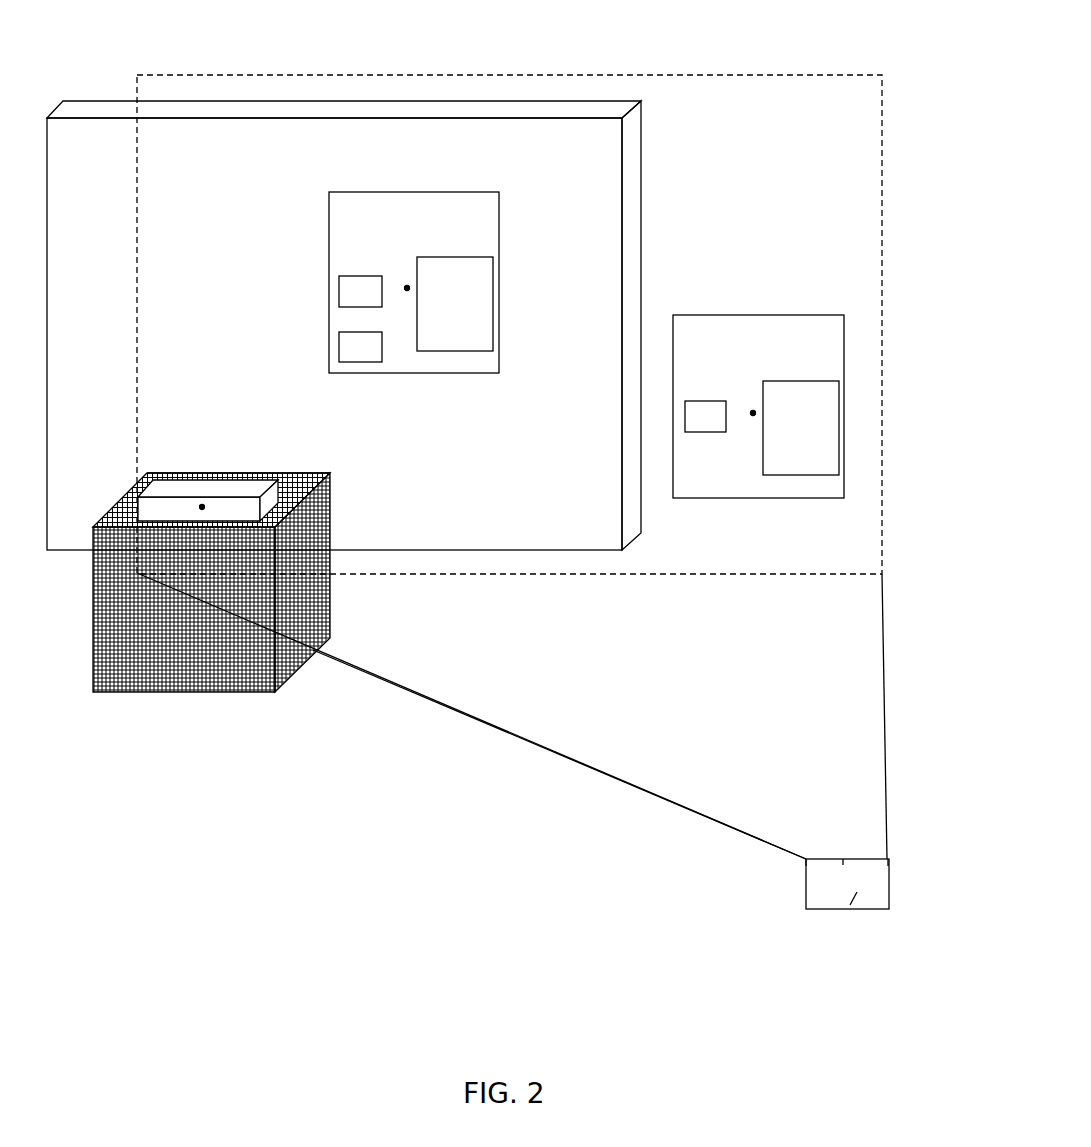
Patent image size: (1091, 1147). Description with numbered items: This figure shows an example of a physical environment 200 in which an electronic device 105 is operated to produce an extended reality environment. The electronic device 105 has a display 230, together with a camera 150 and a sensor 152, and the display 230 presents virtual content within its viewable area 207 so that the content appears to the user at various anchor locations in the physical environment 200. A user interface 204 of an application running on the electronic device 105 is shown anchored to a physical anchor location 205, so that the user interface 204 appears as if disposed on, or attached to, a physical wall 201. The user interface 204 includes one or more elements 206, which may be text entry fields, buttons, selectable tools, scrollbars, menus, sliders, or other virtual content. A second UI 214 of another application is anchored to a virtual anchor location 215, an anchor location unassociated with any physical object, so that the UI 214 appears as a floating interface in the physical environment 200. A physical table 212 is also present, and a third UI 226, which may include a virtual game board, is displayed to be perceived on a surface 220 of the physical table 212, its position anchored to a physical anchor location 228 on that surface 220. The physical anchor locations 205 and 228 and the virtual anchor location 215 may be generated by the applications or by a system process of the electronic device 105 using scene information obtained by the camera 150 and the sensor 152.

The electronic device 105 is at (827, 910).
The camera 150 is at (843, 859).
The sensor 152 is at (806, 859).
The physical environment 200 is at (692, 17).
The physical wall 201 is at (104, 171).
The user interface 204 is at (482, 240).
The physical anchor location 205 is at (400, 279).
The elements 206 is at (368, 349).
The viewable area 207 is at (153, 83).
The physical table 212 is at (257, 672).
The UI 214 is at (833, 358).
The virtual anchor location 215 is at (745, 403).
The surface 220 is at (290, 487).
The UI 226 is at (242, 492).
The physical anchor location 228 is at (190, 500).
The display 230 is at (857, 892).